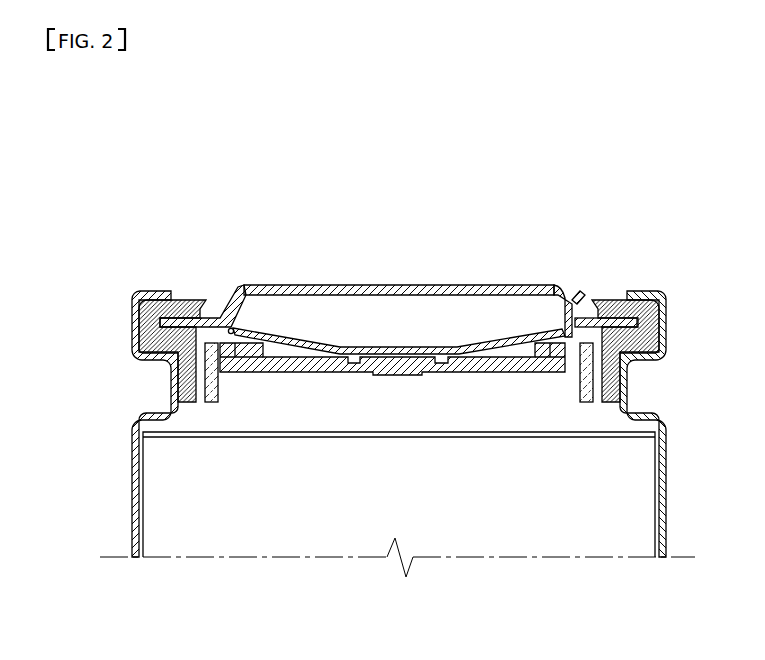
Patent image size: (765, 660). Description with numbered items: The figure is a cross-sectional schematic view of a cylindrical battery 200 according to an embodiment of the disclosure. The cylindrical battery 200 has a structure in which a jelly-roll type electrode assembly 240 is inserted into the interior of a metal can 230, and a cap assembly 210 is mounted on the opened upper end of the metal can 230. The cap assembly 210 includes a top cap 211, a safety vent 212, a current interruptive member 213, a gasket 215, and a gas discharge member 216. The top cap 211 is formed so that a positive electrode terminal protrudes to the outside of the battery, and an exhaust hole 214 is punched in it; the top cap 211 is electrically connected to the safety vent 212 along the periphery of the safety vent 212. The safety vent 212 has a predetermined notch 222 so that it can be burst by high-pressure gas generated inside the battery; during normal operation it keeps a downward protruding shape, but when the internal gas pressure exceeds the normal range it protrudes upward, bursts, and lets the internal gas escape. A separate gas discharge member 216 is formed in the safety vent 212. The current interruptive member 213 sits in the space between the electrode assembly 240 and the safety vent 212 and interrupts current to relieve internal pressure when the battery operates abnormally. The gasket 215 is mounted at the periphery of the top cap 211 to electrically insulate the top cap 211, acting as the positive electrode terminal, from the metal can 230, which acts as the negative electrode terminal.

The cylindrical battery 200 is at (128, 118).
The cap assembly 210 is at (228, 194).
The top cap 211 is at (385, 288).
The safety vent 212 is at (497, 342).
The current interruptive member 213 is at (320, 367).
The exhaust hole 214 is at (217, 288).
The gasket 215 is at (148, 328).
The gas discharge member 216 is at (578, 296).
The notch 222 is at (234, 328).
The metal can 230 is at (134, 463).
The electrode assembly 240 is at (168, 517).